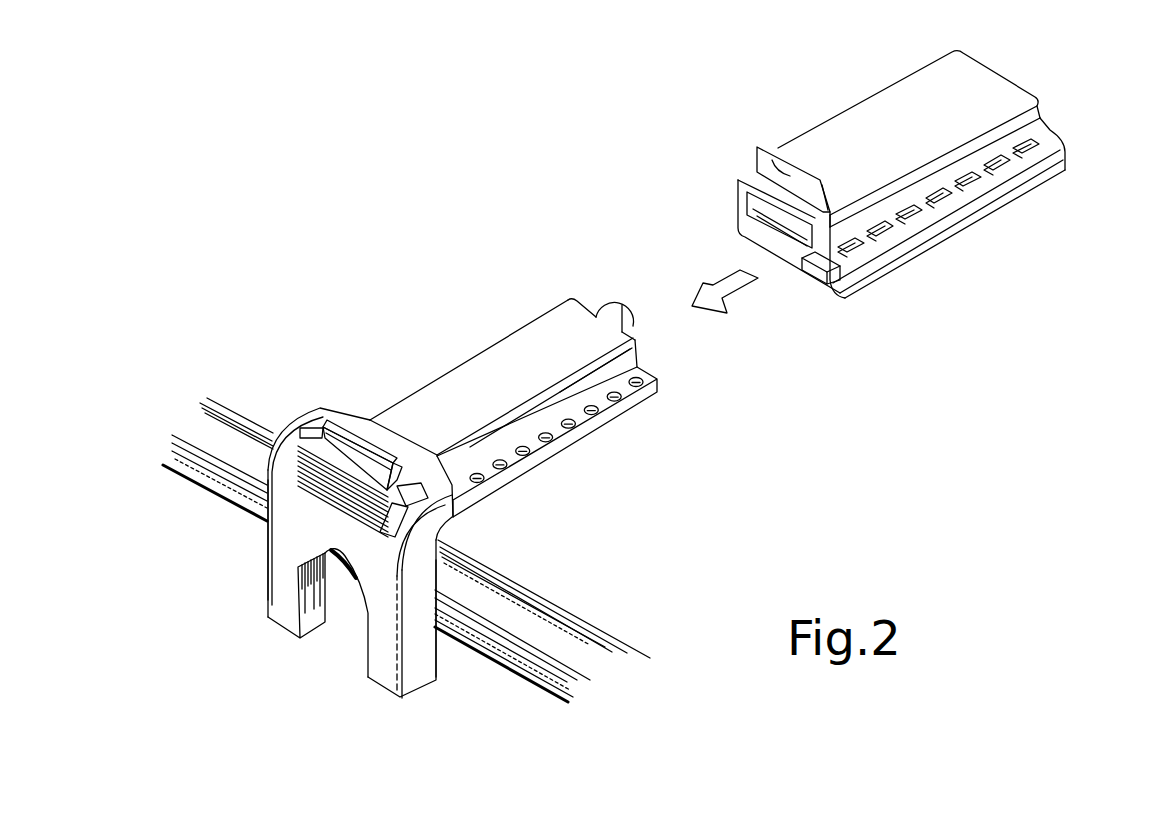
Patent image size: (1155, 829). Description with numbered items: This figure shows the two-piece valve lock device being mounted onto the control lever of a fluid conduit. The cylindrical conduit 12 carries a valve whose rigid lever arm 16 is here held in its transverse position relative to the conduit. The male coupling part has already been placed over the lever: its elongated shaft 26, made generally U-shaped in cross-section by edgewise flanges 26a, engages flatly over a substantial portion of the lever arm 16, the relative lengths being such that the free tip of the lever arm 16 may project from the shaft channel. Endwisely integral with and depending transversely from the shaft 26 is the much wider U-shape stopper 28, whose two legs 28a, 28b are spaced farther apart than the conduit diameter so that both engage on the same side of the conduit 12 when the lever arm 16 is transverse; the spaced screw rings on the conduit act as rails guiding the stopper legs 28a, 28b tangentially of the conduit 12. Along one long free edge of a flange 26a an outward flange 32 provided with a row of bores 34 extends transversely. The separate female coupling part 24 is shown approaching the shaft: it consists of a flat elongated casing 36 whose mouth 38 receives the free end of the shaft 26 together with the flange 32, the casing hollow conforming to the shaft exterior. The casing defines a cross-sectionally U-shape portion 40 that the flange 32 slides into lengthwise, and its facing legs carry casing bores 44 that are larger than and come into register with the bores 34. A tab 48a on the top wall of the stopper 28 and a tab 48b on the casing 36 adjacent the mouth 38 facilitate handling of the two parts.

The cylindrical conduit 12 is at (222, 427).
The lever arm 16 is at (607, 302).
The female coupling part 24 is at (855, 210).
The shaft 26 is at (514, 391).
The edgewise flange 26a is at (620, 362).
The U-shape stopper 28 is at (316, 528).
The stopper leg 28a is at (275, 602).
The stopper leg 28b is at (417, 663).
The outward flange 32 is at (508, 472).
The bores 34 is at (615, 401).
The casing 36 is at (931, 141).
The mouth 38 is at (765, 215).
The U-shape portion 40 is at (855, 258).
The casing bores 44 is at (987, 173).
The tab 48a is at (353, 452).
The tab 48b is at (788, 177).